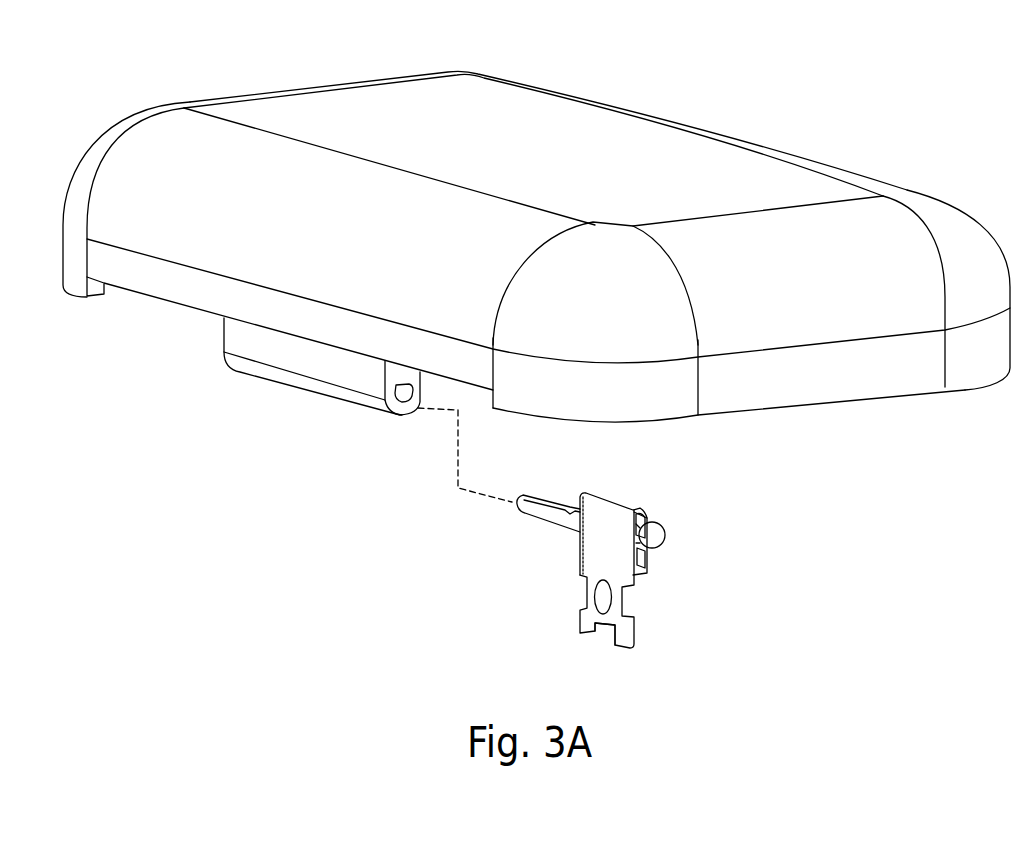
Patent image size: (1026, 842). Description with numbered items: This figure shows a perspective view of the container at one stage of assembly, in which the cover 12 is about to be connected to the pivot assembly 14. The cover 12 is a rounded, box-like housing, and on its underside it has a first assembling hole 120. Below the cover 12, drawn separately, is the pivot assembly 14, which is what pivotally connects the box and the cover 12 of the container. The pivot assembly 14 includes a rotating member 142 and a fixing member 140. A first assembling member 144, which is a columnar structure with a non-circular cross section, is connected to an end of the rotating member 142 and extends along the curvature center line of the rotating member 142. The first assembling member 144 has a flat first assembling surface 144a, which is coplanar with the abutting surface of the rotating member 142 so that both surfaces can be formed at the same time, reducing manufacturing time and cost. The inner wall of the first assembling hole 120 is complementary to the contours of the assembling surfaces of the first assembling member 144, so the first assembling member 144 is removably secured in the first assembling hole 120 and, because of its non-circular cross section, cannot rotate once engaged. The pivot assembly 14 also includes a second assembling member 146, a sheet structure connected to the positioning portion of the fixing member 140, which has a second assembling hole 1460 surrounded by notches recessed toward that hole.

The cover 12 is at (536, 262).
The first assembling hole 120 is at (403, 401).
The pivot assembly 14 is at (631, 537).
The fixing member 140 is at (617, 557).
The rotating member 142 is at (657, 540).
The first assembling member 144 is at (547, 505).
The first assembling surface 144a is at (553, 502).
The second assembling member 146 is at (587, 632).
The second assembling hole 1460 is at (600, 594).